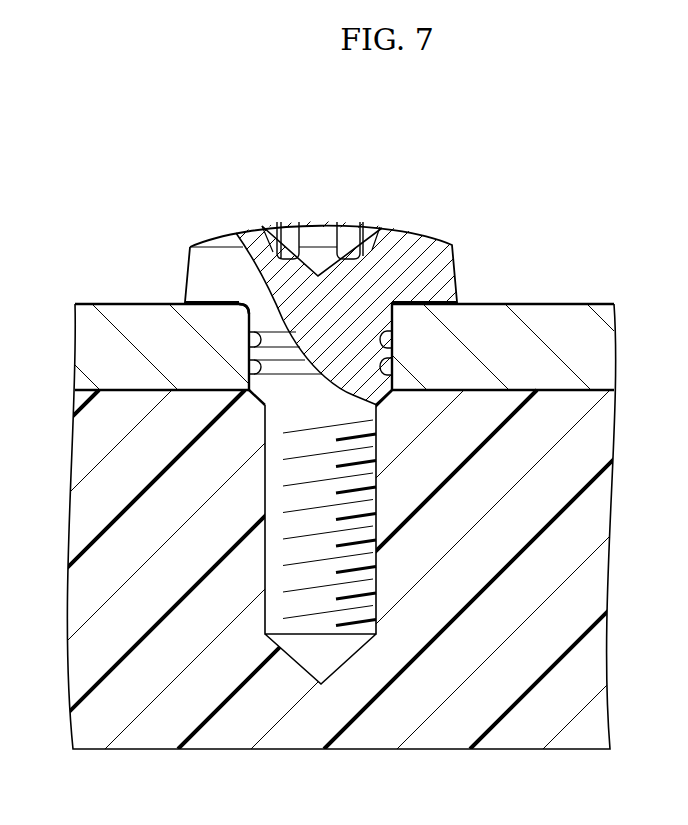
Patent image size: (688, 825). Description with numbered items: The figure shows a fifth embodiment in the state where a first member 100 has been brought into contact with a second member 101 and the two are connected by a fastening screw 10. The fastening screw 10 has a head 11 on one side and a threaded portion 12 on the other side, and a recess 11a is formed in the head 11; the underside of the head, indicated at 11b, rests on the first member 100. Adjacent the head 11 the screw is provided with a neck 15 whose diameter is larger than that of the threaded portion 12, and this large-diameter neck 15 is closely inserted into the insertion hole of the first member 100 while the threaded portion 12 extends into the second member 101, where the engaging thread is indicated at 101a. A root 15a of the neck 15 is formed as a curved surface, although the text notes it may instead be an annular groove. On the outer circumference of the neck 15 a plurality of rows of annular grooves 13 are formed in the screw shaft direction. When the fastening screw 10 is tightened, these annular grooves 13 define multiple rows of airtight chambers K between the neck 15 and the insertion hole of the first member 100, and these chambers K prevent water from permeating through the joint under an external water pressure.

The fastening screw 10 is at (455, 235).
The head 11 is at (222, 258).
The recess 11a is at (318, 238).
The seating surface of head 11b is at (205, 304).
The threaded portion 12 is at (280, 560).
The annular grooves 13 is at (395, 333).
The neck 15 is at (282, 398).
The root 15a is at (247, 308).
The first member 100 is at (93, 345).
The second member 101 is at (303, 750).
The thread 101a is at (363, 503).
The airtight chambers K is at (252, 366).